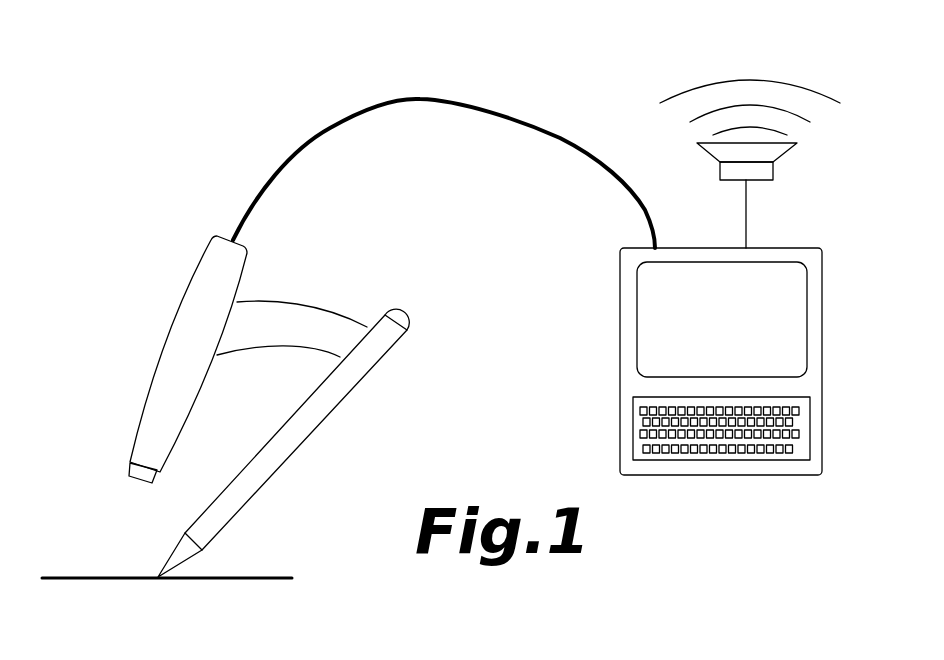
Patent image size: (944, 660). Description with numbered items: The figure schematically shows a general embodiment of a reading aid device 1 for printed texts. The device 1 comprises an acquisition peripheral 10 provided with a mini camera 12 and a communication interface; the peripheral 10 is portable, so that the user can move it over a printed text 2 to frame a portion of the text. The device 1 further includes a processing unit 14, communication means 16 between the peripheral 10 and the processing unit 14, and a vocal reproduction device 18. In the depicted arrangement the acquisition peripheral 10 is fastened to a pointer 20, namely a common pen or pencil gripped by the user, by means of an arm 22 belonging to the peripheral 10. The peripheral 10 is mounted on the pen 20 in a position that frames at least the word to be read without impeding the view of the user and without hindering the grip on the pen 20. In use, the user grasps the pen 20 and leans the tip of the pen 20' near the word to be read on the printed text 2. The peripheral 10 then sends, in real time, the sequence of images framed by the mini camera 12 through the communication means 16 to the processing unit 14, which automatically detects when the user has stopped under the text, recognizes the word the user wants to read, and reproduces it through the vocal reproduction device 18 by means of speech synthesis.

The reading aid device 1 is at (562, 113).
The printed text 2 is at (80, 576).
The acquisition peripheral 10 is at (155, 330).
The mini camera 12 is at (130, 463).
The processing unit 14 is at (823, 350).
The communication means 16 is at (377, 102).
The vocal reproduction device 18 is at (773, 170).
The pointer 20 is at (309, 429).
The tip of the pen 20' is at (162, 542).
The arm 22 is at (312, 303).